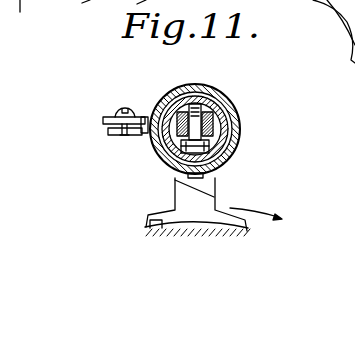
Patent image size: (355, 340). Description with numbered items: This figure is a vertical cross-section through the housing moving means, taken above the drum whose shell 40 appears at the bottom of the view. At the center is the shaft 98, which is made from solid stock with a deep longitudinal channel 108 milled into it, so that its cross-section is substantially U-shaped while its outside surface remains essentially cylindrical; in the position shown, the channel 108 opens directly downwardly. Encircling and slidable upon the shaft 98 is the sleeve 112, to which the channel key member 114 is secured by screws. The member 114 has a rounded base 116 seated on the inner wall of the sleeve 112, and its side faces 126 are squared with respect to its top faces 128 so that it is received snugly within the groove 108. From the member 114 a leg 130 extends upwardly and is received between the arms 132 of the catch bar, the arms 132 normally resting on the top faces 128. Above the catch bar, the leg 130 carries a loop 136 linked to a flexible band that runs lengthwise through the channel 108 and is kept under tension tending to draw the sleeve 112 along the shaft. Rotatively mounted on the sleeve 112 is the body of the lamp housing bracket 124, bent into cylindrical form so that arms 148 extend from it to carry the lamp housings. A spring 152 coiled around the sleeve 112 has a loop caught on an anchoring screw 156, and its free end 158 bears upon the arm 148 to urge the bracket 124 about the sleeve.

The shell 40 is at (146, 223).
The shaft 98 is at (240, 115).
The channel 108 is at (158, 104).
The sleeve 112 is at (220, 98).
The channel key member 114 is at (207, 100).
The rounded base 116 is at (177, 171).
The lamp housing bracket 124 is at (128, 142).
The side faces 126 is at (232, 160).
The top faces 128 is at (172, 166).
The leg 130 is at (187, 97).
The arms 132 is at (293, 145).
The loop 136 is at (178, 88).
The arm 148 is at (70, 8).
The spring 152 is at (242, 103).
The anchoring screw 156 is at (296, 0).
The free end 158 is at (126, 8).